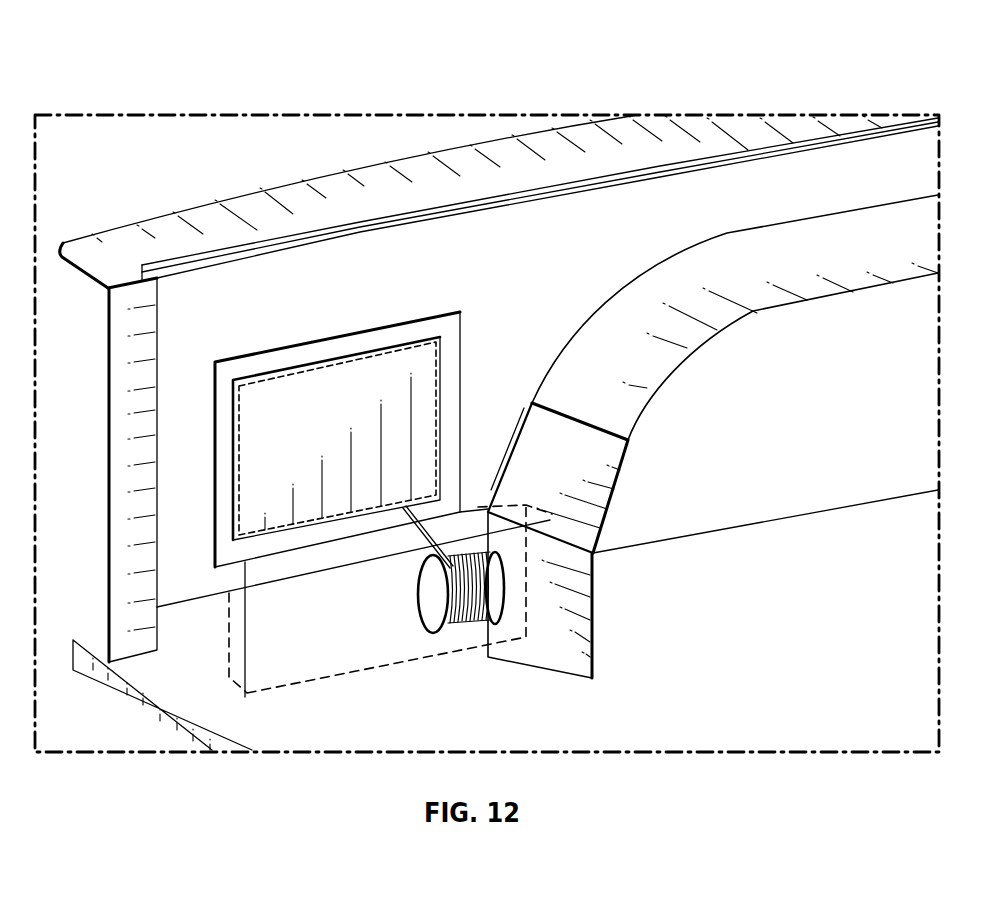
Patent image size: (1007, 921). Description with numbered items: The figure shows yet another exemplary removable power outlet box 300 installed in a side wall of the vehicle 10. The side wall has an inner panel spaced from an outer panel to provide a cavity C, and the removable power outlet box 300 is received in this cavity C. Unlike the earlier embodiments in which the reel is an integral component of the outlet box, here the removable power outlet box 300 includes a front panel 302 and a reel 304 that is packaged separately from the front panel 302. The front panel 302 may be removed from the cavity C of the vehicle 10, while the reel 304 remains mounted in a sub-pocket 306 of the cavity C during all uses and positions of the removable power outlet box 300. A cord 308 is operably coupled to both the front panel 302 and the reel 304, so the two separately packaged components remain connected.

The vehicle 10 is at (487, 383).
The removable power outlet box 300 is at (356, 437).
The front panel 302 is at (452, 347).
The cavity C is at (443, 417).
The reel 304 is at (437, 611).
The sub-pocket 306 is at (342, 672).
The cord 308 is at (465, 624).